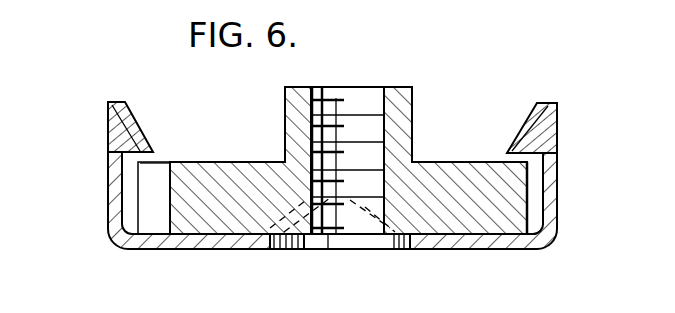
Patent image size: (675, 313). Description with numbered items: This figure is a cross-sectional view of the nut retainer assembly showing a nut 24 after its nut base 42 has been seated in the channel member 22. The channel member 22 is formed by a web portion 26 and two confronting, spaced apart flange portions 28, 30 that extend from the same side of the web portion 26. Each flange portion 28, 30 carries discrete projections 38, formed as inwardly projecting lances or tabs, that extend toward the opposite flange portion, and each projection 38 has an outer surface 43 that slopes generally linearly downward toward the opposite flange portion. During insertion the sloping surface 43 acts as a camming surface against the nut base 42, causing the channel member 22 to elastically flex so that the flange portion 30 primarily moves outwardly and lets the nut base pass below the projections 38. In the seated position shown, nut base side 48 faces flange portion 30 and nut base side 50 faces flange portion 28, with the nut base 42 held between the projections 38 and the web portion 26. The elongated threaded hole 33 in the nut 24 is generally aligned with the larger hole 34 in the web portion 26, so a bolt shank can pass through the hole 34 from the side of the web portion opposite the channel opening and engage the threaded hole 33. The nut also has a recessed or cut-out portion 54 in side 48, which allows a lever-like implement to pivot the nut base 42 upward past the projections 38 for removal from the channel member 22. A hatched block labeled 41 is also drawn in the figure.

The channel member 22 is at (548, 248).
The nut 24 is at (434, 159).
The web portion 26 is at (493, 251).
The flange portion 28 is at (553, 182).
The flange portion 30 is at (108, 181).
The threaded hole 33 is at (362, 97).
The hole 34 is at (375, 251).
The projection 38 is at (108, 122).
The left body block 41 is at (288, 126).
The nut base 42 is at (474, 175).
The outer surface 43 is at (130, 128).
The side 48 is at (163, 210).
The side 50 is at (528, 210).
The cut-out portion 54 is at (154, 178).